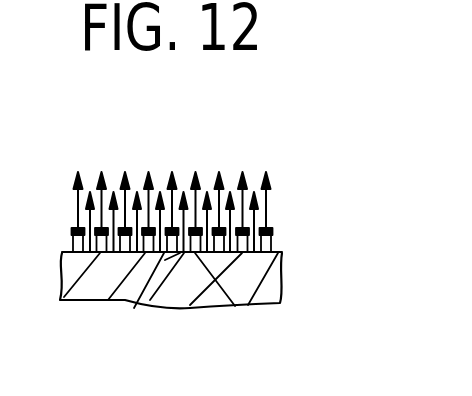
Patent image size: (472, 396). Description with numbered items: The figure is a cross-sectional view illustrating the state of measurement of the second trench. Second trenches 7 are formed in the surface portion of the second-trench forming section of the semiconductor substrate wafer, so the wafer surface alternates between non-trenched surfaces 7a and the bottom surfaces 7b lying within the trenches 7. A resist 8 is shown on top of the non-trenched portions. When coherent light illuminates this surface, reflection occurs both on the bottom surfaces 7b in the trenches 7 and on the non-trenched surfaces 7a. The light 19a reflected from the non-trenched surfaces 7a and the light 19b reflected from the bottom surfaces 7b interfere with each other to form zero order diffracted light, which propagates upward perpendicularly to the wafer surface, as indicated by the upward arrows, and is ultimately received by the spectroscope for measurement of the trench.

The second trench 7 is at (134, 308).
The non-trenched surface 7a is at (235, 306).
The bottom surface 7b is at (162, 253).
The resist 8 is at (270, 226).
The light reflected from the non-trenched surfaces 19a is at (130, 168).
The light reflected from the bottom surfaces 19b is at (162, 182).